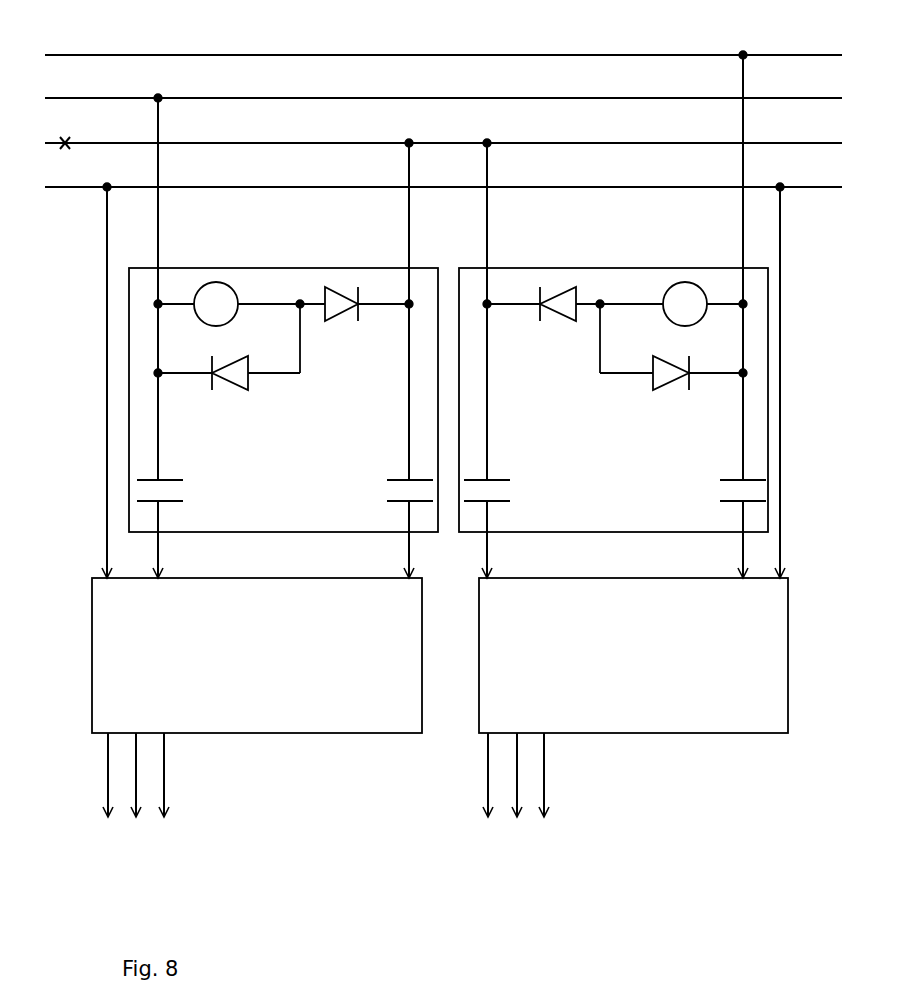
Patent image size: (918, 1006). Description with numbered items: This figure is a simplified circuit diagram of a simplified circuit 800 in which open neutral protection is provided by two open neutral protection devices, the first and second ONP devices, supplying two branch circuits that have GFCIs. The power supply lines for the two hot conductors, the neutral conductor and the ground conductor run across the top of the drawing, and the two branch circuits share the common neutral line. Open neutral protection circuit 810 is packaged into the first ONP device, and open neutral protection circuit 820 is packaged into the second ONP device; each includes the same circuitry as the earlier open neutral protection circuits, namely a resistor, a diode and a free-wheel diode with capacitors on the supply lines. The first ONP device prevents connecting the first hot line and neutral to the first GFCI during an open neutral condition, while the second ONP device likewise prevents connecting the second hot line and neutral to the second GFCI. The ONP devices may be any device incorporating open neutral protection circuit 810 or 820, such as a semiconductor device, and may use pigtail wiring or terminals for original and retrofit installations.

The simplified circuit 800 is at (95, 45).
The open neutral protection circuit 810 is at (262, 251).
The open neutral protection circuit 820 is at (598, 255).